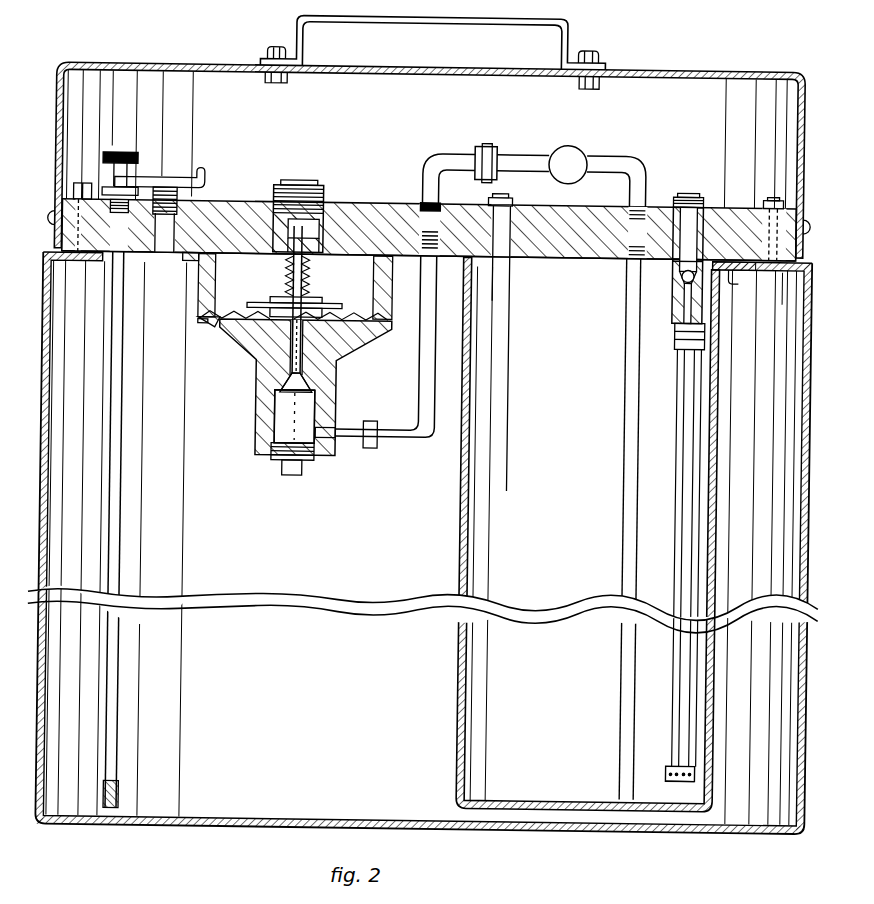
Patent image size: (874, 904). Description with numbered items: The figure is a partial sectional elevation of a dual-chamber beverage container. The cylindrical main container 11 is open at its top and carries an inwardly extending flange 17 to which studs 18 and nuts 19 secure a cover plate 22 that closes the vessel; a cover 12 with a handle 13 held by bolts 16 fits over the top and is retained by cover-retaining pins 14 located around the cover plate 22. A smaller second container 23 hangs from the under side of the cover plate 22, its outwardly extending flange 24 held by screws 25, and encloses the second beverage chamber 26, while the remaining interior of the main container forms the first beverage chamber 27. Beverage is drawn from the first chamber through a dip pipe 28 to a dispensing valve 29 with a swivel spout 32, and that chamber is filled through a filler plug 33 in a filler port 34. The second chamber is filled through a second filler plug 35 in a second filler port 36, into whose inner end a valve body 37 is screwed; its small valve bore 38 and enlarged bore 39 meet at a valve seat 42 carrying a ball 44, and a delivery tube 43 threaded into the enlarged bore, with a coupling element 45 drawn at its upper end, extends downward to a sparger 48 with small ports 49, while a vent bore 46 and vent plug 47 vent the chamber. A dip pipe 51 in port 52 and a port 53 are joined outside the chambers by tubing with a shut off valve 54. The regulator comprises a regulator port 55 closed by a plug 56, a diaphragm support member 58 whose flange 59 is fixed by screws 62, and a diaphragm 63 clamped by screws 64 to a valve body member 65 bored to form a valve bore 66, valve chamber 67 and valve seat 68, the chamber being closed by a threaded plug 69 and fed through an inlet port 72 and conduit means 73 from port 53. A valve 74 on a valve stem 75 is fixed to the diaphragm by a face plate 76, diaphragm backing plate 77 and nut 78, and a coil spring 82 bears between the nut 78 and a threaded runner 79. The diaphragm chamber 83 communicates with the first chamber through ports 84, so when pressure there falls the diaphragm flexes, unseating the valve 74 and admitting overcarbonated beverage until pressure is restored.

The container 11 is at (802, 445).
The cover 12 is at (720, 69).
The handle 13 is at (560, 22).
The cover-retaining pins 14 is at (49, 221).
The bolts 16 is at (594, 54).
The flange 17 is at (780, 282).
The studs 18 is at (765, 199).
The nuts 19 is at (770, 200).
The cover plate 22 is at (224, 205).
The second container 23 is at (718, 502).
The flange 24 is at (742, 267).
The screws 25 is at (731, 281).
The chamber 26 is at (466, 498).
The first beverage chamber 27 is at (242, 826).
The dip pipe 28 is at (122, 676).
The dispensing valve 29 is at (100, 164).
The swivel spout 32 is at (136, 191).
The filler plug 33 is at (168, 181).
The filler port 34 is at (176, 225).
The second filler plug 35 is at (688, 192).
The second filler port 36 is at (672, 246).
The valve body 37 is at (668, 259).
The valve bore 38 is at (674, 270).
The enlarged bore 39 is at (683, 310).
The valve seat 42 is at (679, 284).
The delivery tube 43 is at (682, 430).
The ball 44 is at (682, 297).
The coupling 45 is at (704, 330).
The vent bore 46 is at (506, 253).
The vent plug 47 is at (508, 200).
The sparger 48 is at (674, 764).
The ports 49 is at (668, 771).
The dip pipe 51 is at (624, 522).
The port 52 is at (628, 240).
The port 53 is at (418, 226).
The shut off valve 54 is at (578, 151).
The regulator port 55 is at (270, 216).
The plug 56 is at (312, 184).
The diaphragm support member 58 is at (386, 278).
The flange 59 is at (170, 262).
The screws 62 is at (187, 265).
The diaphragm 63 is at (212, 303).
The screws 64 is at (203, 326).
The valve body member 65 is at (337, 404).
The valve bore 66 is at (270, 345).
The valve chamber 67 is at (284, 436).
The valve seat 68 is at (322, 380).
The threaded plug 69 is at (282, 470).
The inlet port 72 is at (333, 441).
The conduit means 73 is at (396, 438).
The valve 74 is at (288, 381).
The valve stem 75 is at (289, 362).
The face plate 76 is at (240, 335).
The diaphragm backing plate 77 is at (266, 305).
The nut 78 is at (316, 300).
The threaded runner 79 is at (318, 240).
The coil spring 82 is at (287, 272).
The diaphragm chamber 83 is at (362, 332).
The ports 84 is at (226, 326).